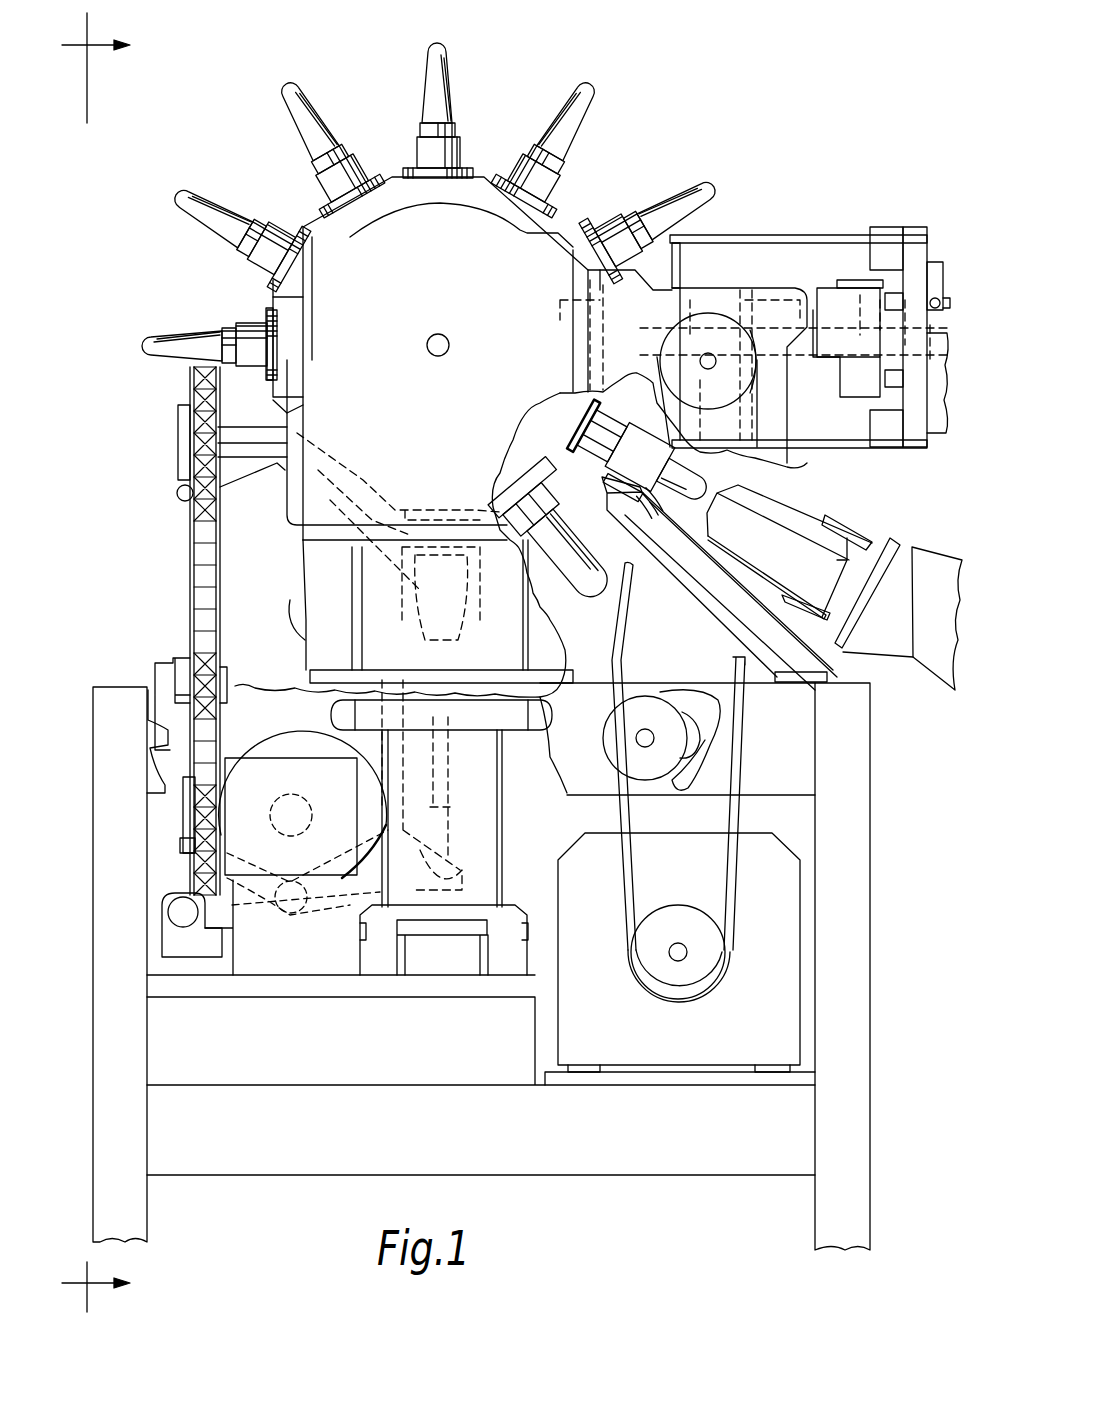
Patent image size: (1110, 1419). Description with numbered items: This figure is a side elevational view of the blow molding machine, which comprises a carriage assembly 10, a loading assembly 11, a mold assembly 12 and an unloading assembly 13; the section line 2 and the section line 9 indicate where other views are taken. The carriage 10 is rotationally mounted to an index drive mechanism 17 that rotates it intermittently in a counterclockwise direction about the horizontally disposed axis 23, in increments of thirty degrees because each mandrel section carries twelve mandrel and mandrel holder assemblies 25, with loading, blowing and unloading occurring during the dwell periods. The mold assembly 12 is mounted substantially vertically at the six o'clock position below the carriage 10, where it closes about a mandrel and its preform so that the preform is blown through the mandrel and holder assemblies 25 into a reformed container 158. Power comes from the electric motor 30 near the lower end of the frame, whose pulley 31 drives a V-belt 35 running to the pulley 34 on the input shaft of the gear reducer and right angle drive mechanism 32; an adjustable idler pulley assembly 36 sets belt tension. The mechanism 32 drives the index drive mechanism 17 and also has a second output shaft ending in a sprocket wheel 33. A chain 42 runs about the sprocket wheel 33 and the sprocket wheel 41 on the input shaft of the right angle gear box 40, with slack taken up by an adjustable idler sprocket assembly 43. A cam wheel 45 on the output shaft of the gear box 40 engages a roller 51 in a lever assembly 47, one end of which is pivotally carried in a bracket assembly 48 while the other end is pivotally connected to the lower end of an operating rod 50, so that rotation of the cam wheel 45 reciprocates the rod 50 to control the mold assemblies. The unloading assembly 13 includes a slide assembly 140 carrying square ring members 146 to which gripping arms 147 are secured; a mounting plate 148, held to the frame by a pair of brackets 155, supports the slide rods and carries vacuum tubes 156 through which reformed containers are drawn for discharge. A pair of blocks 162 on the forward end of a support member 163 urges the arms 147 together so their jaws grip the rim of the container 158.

The section line 2- 2 is at (96, 662).
The section line 9- 9 is at (642, 385).
The carriage assembly 10 is at (285, 188).
The loading assembly 11 is at (808, 228).
The mold assembly 12 is at (380, 611).
The unloading assembly 13 is at (893, 468).
The index drive mechanism 17 is at (406, 411).
The axis 23 is at (446, 336).
The mandrel and mandrel holder assemblies 25 is at (412, 80).
The electric motor 30 is at (737, 1047).
The pulley 31 is at (680, 918).
The gear reducer and right angle drive mechanism 32 is at (710, 288).
The sprocket wheel 33 is at (183, 403).
The pulley 34 is at (737, 388).
The V-belt 35 is at (627, 622).
The idler pulley assembly 36 is at (642, 690).
The right angle gear box 40 is at (285, 975).
The sprocket wheel 41 is at (190, 835).
The chain 42 is at (190, 545).
The adjustable idler sprocket assembly 43 is at (180, 655).
The cam wheel 45 is at (275, 722).
The lever assembly 47 is at (223, 925).
The bracket assembly 48 is at (175, 942).
The operating rod 50 is at (455, 772).
The roller 51 is at (326, 912).
The slide assembly 140 is at (850, 538).
The square ring members 146 is at (830, 598).
The gripping arms 147 is at (762, 525).
The mounting plate 148 is at (882, 545).
The brackets 155 is at (888, 680).
The vacuum tubes 156 is at (796, 522).
The reformed container 158 is at (578, 522).
The blocks 162 is at (658, 460).
The support member 163 is at (690, 568).